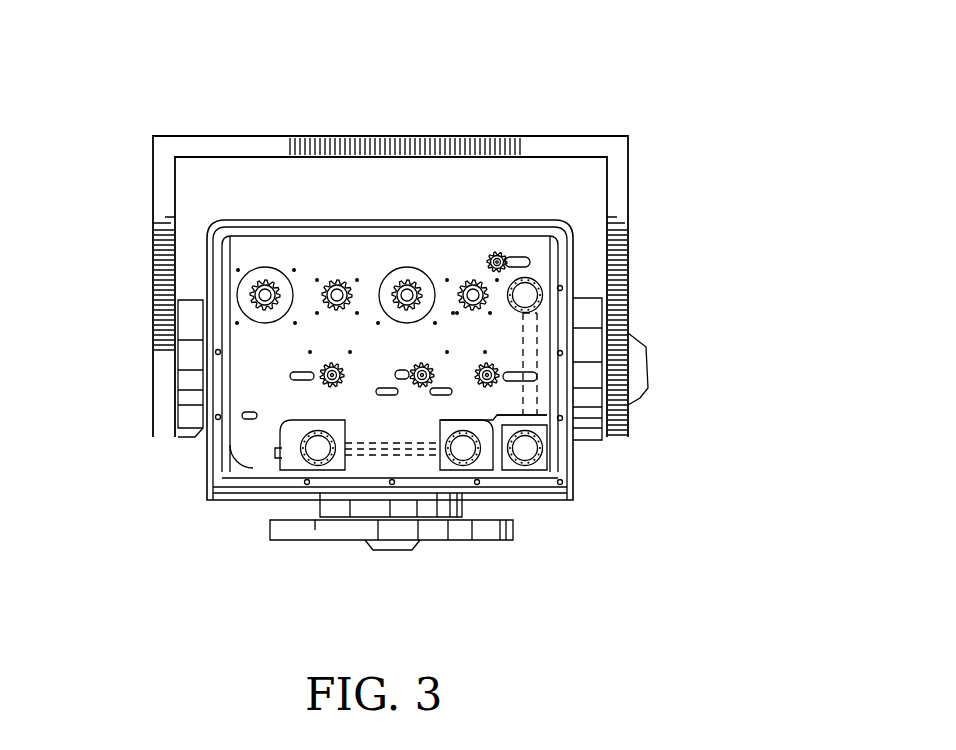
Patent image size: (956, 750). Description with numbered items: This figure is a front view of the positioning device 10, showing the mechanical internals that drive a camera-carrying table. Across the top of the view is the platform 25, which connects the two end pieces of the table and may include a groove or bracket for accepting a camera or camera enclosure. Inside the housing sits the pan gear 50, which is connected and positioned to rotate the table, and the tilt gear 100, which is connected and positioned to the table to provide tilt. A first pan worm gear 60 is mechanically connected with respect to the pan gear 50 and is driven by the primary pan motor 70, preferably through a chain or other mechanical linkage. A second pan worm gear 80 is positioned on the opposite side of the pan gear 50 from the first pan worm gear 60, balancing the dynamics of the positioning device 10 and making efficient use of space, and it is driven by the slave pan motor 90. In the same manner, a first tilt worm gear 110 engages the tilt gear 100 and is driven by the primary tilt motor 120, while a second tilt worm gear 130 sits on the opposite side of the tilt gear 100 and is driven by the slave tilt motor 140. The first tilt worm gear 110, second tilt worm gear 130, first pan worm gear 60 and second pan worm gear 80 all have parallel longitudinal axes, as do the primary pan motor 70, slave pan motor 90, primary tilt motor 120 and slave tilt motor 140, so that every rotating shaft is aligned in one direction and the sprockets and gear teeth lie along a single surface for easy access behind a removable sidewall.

The positioning device 10 is at (693, 189).
The platform 25 is at (570, 147).
The pan gear 50 is at (362, 452).
The first pan worm gear 60 is at (316, 450).
The primary pan motor 70 is at (265, 295).
The second pan worm gear 80 is at (463, 450).
The slave pan motor 90 is at (337, 290).
The tilt gear 100 is at (547, 418).
The first tilt worm gear 110 is at (528, 293).
The primary tilt motor 120 is at (402, 288).
The second tilt worm gear 130 is at (527, 448).
The slave tilt motor 140 is at (467, 288).